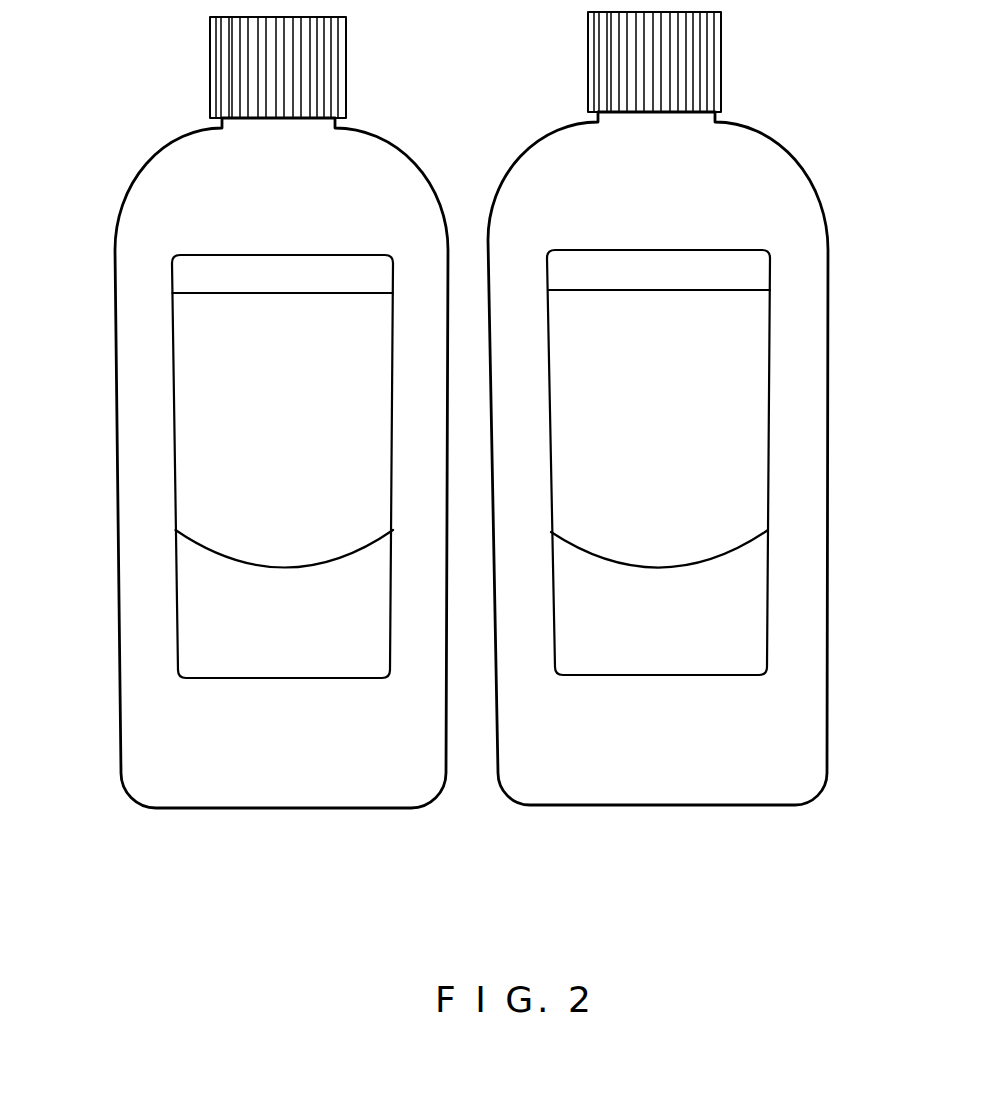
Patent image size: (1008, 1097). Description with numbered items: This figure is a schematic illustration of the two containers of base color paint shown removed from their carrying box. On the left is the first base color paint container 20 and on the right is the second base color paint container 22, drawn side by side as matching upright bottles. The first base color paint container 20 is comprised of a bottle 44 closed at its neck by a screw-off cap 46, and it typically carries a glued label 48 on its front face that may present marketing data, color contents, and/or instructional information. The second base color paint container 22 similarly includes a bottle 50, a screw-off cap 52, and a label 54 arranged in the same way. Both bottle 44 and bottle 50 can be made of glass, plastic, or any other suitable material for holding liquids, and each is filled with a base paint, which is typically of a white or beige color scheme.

The first base color paint container 20 is at (263, 457).
The second base color paint container 22 is at (691, 452).
The bottle 44 is at (318, 808).
The screw-off cap 46 is at (346, 58).
The glued label 48 is at (172, 517).
The bottle 50 is at (697, 805).
The screw-off cap 52 is at (721, 52).
The label 54 is at (767, 608).